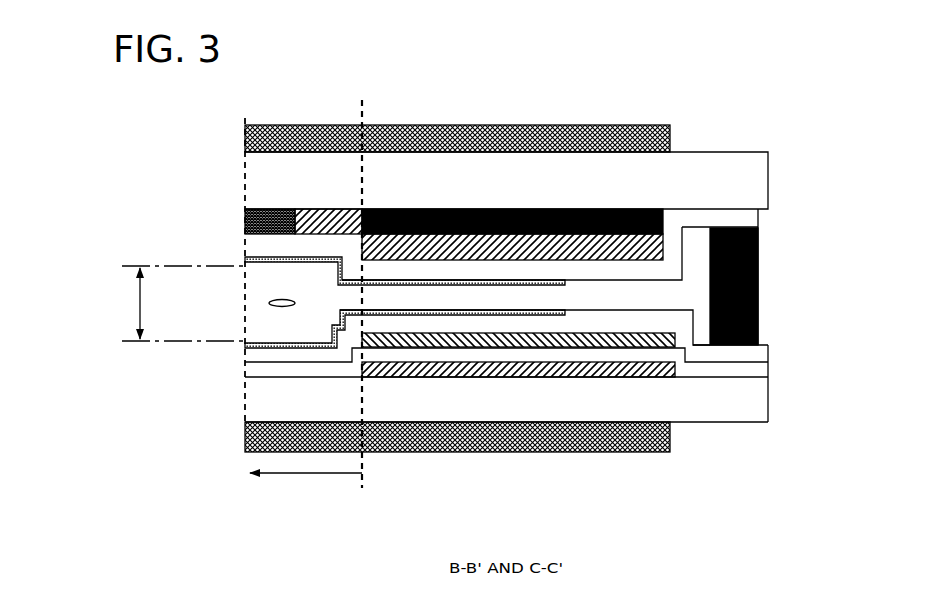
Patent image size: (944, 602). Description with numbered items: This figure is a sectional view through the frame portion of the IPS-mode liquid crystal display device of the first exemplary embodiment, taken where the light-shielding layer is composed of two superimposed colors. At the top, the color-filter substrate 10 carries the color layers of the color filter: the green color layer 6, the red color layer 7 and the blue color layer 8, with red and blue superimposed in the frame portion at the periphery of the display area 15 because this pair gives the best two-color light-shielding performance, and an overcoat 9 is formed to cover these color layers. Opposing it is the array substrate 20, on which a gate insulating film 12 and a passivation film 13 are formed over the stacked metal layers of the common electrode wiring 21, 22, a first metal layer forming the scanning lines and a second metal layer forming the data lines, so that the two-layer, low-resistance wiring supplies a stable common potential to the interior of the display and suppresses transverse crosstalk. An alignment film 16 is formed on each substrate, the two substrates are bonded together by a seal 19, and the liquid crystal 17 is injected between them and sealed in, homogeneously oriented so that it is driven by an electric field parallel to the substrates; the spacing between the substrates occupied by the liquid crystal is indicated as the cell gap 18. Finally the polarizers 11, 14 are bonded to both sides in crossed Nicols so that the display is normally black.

The green color layer 6 is at (245, 221).
The red color layer 7 is at (538, 209).
The blue color layer 8 is at (604, 243).
The overcoat 9 is at (702, 218).
The color-filter substrate 10 is at (260, 181).
The polarizer 11 is at (425, 137).
The gate insulating film 12 is at (748, 371).
The passivation film 13 is at (768, 345).
The polarizer 14 is at (483, 437).
The display area 15 is at (306, 491).
The alignment film 16 is at (257, 263).
The liquid crystal 17 is at (263, 302).
The cell gap 18 is at (141, 303).
The seal 19 is at (757, 249).
The array substrate 20 is at (262, 404).
The common electrode wiring 21 is at (577, 371).
The common electrode wiring 22 is at (650, 340).